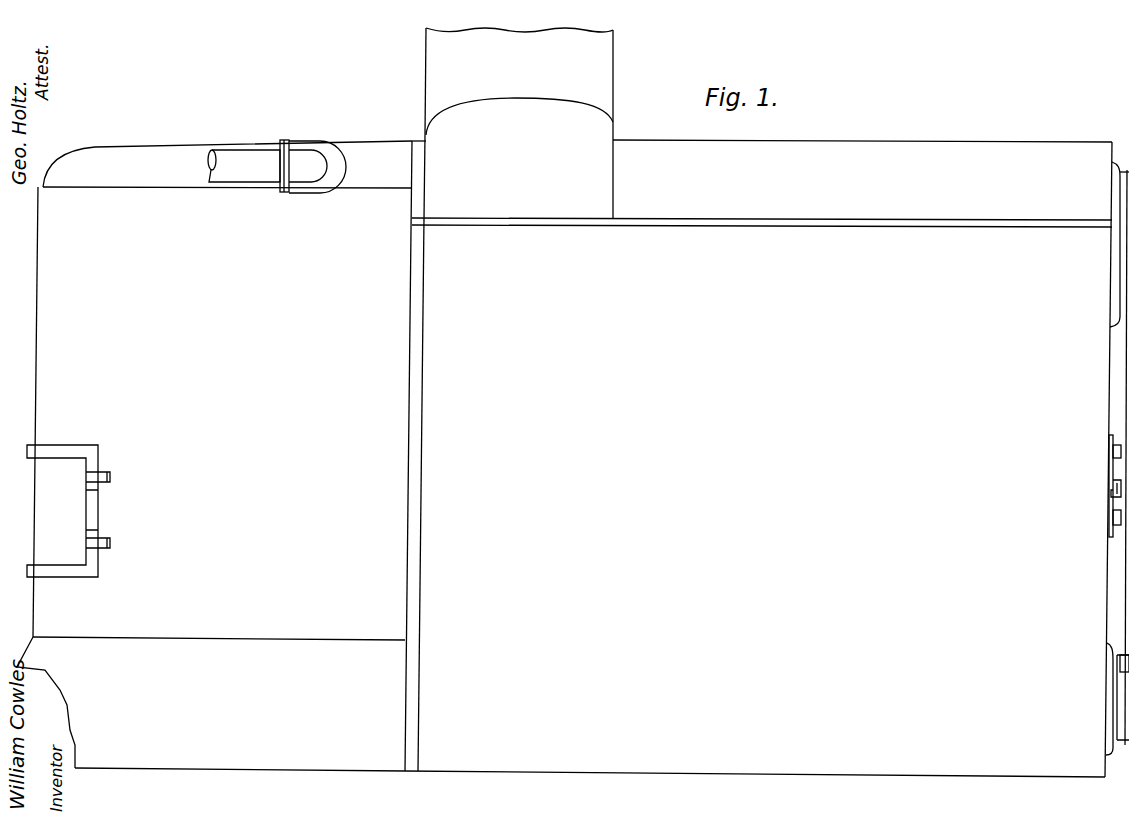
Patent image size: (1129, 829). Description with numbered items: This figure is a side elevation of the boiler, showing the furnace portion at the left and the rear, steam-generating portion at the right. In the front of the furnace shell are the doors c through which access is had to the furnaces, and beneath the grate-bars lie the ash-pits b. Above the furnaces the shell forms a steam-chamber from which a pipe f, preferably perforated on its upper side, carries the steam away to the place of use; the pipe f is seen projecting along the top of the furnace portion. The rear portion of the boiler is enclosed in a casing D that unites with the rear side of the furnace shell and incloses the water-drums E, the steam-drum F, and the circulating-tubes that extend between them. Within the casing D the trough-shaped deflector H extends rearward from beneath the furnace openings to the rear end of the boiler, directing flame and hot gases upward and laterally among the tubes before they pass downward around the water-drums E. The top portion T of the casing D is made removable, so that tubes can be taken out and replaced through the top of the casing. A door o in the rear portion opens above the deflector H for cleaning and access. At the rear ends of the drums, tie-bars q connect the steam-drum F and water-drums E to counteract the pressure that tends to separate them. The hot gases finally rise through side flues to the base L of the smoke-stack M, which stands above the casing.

The smoke-stack M is at (519, 81).
The base of the smoke-stack L is at (512, 170).
The top portion of the casing T is at (762, 183).
The steam-drum F is at (1120, 187).
The trough-shaped deflector H is at (222, 390).
The casing D is at (758, 459).
The tie-bars q is at (1128, 391).
The door o is at (1108, 475).
The water-drums E is at (1110, 675).
The doors c is at (68, 511).
The ash-pits b is at (211, 704).
The pipe f is at (277, 166).